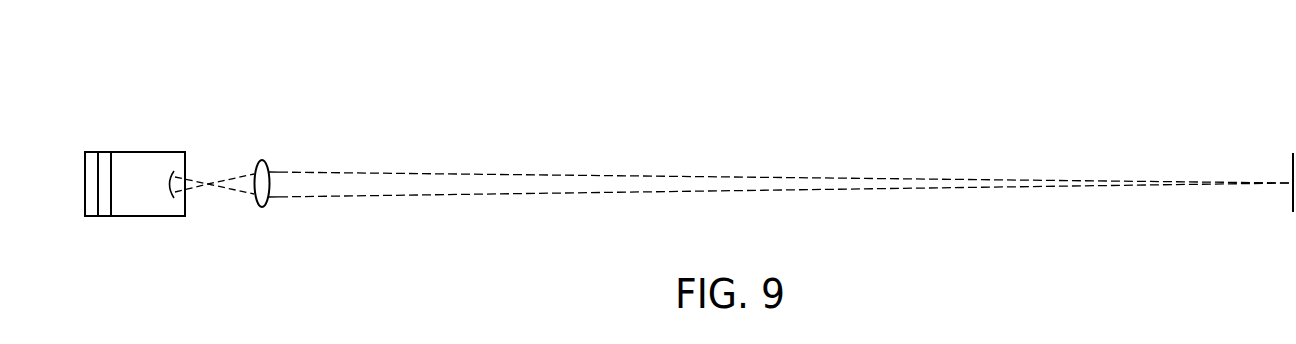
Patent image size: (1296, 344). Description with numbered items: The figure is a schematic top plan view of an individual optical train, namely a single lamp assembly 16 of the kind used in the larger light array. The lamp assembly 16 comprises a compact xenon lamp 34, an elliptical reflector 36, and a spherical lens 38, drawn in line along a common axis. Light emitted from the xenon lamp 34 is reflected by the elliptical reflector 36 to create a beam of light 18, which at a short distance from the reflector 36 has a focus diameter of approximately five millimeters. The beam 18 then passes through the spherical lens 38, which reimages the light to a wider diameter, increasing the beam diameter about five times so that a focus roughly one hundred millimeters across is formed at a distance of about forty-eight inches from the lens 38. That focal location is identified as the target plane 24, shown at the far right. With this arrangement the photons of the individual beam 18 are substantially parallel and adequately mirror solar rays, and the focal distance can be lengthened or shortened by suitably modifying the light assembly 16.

The lamp assembly 16 is at (140, 134).
The compact xenon lamp 34 is at (123, 216).
The elliptical reflector 36 is at (172, 172).
The spherical lens 38 is at (262, 207).
The beam of light 18 is at (752, 191).
The target plane 24 is at (1290, 186).